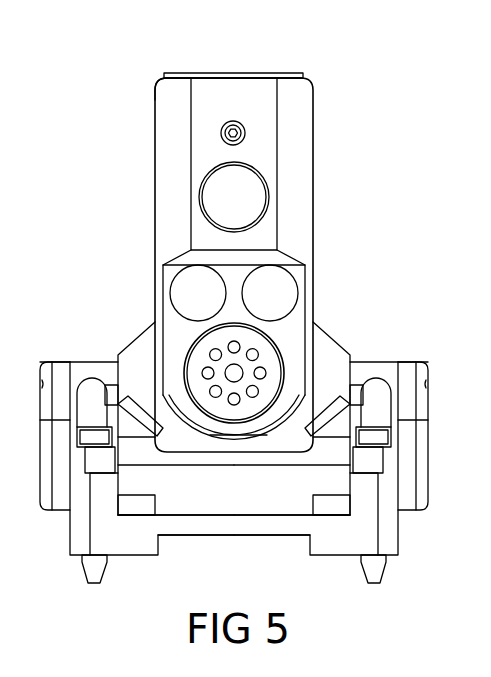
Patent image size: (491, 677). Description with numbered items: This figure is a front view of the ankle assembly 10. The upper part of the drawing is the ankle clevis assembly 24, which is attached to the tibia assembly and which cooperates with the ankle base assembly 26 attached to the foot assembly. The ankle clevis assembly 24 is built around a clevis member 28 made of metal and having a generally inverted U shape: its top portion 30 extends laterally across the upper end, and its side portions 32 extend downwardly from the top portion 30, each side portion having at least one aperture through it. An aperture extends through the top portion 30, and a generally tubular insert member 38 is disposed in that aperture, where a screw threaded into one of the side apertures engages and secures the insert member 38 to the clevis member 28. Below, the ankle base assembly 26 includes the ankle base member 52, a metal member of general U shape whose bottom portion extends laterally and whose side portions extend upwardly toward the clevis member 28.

The ankle assembly 10 is at (367, 64).
The ankle clevis assembly 24 is at (146, 155).
The ankle base assembly 26 is at (405, 539).
The clevis member 28 is at (157, 82).
The top portion 30 is at (260, 78).
The side portions 32 is at (301, 186).
The insert member 38 is at (216, 75).
The ankle base member 52 is at (225, 530).